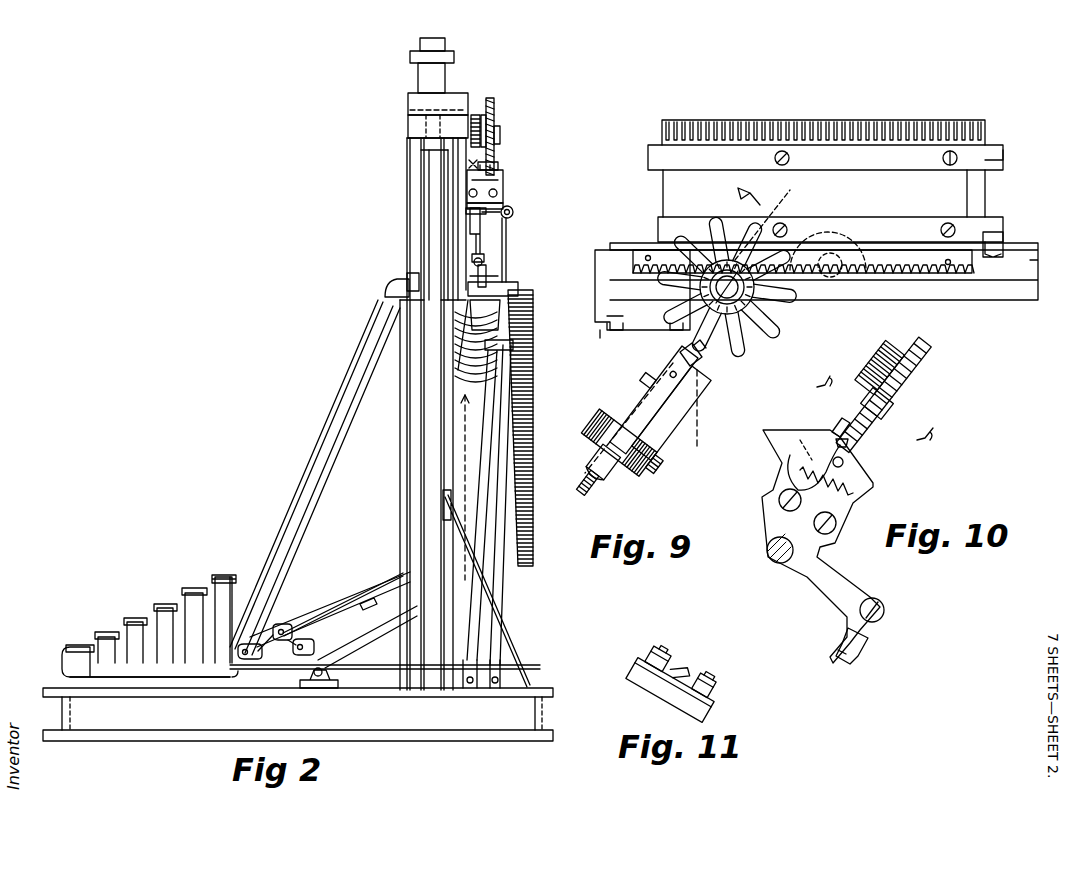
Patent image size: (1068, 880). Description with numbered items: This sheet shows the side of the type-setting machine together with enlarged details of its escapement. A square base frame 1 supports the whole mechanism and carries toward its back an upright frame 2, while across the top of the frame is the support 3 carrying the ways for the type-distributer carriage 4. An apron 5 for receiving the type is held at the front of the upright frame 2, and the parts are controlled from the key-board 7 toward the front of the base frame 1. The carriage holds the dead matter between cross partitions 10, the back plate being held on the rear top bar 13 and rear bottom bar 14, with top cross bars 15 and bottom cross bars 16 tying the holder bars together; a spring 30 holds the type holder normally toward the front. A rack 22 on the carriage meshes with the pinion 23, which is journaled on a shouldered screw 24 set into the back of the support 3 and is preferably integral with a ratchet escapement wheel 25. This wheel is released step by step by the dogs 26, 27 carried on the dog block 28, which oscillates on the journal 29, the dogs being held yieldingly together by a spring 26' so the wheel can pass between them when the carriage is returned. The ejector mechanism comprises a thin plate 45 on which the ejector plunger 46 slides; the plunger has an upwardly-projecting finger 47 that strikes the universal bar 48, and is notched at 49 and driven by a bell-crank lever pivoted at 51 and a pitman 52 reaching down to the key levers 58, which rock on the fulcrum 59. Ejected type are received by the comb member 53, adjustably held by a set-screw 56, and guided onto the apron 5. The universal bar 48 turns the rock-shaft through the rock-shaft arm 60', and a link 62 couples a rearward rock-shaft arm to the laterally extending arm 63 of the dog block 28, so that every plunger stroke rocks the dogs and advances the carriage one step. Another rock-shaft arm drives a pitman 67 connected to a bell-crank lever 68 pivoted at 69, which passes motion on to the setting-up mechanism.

In FIG. 2, the base frame 1 is at (482, 722).
In FIG. 2, the upright frame 2 is at (425, 183).
In FIG. 2, the support 3 is at (412, 128).
In FIG. 9, the support 3 is at (1010, 300).
In FIG. 2, the type-distributer carriage 4 is at (425, 75).
In FIG. 9, the type-distributer carriage 4 is at (935, 207).
In FIG. 2, the apron 5 is at (322, 438).
In FIG. 10, the apron 5 is at (875, 400).
In FIG. 2, the key-board 7 is at (217, 578).
In FIG. 9, the cross partitions 10 is at (810, 120).
In FIG. 9, the rear top bar 13 is at (855, 160).
In FIG. 9, the rear bottom bar 14 is at (850, 225).
In FIG. 9, the top cross bars 15 is at (1000, 160).
In FIG. 9, the bottom cross bars 16 is at (1005, 242).
In FIG. 2, the rack 22 is at (476, 114).
In FIG. 9, the rack 22 is at (962, 268).
In FIG. 2, the pinion 23 is at (496, 125).
In FIG. 9, the pinion 23 is at (880, 356).
In FIG. 10, the pinion 23 is at (880, 356).
In FIG. 2, the shouldered screw 24 is at (500, 135).
In FIG. 9, the shouldered screw 24 is at (780, 315).
In FIG. 2, the escapement wheel 25 is at (491, 100).
In FIG. 9, the escapement wheel 25 is at (790, 303).
In FIG. 10, the escapement wheel 25 is at (928, 355).
In FIG. 2, the dog 26 is at (470, 158).
In FIG. 10, the dog 26 is at (855, 464).
In FIG. 11, the dog 26 is at (732, 679).
In FIG. 2, the spring 26' is at (521, 184).
In FIG. 2, the dog 27 is at (498, 168).
In FIG. 9, the dog 27 is at (705, 360).
In FIG. 10, the dog 27 is at (830, 430).
In FIG. 11, the dog 27 is at (655, 652).
In FIG. 2, the dog block 28 is at (505, 198).
In FIG. 9, the dog block 28 is at (700, 390).
In FIG. 10, the dog block 28 is at (770, 520).
In FIG. 11, the dog block 28 is at (660, 680).
In FIG. 2, the journal 29 is at (513, 213).
In FIG. 9, the journal 29 is at (692, 490).
In FIG. 10, the journal 29 is at (770, 560).
In FIG. 2, the spring 30 is at (469, 487).
In FIG. 2, the thin plate 45 is at (470, 330).
In FIG. 2, the ejector plunger 46 is at (534, 300).
In FIG. 2, the finger 47 is at (490, 276).
In FIG. 2, the universal bar 48 is at (490, 256).
In FIG. 2, the notch 49 is at (508, 287).
In FIG. 2, the pivot 51 is at (458, 345).
In FIG. 2, the pitman 52 is at (496, 438).
In FIG. 2, the comb member 53 is at (388, 290).
In FIG. 2, the set-screw 56 is at (407, 277).
In FIG. 2, the key-board levers 58 is at (382, 670).
In FIG. 2, the fulcrum 59 is at (305, 690).
In FIG. 2, the rock-shaft arm 60' is at (429, 237).
In FIG. 2, the link 62 is at (488, 268).
In FIG. 9, the link 62 is at (618, 515).
In FIG. 10, the link 62 is at (845, 658).
In FIG. 2, the laterally extending arm 63 is at (511, 220).
In FIG. 9, the laterally extending arm 63 is at (622, 472).
In FIG. 10, the laterally extending arm 63 is at (835, 597).
In FIG. 2, the pitman 67 is at (348, 603).
In FIG. 2, the bell-crank lever 68 is at (300, 628).
In FIG. 2, the pivot 69 is at (276, 649).